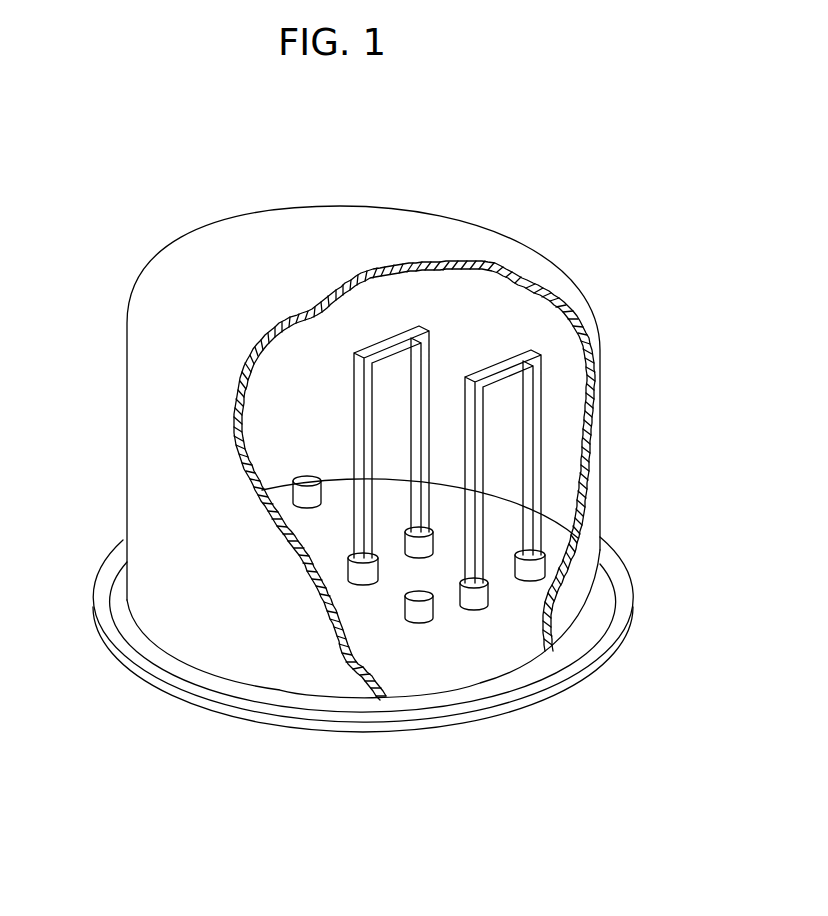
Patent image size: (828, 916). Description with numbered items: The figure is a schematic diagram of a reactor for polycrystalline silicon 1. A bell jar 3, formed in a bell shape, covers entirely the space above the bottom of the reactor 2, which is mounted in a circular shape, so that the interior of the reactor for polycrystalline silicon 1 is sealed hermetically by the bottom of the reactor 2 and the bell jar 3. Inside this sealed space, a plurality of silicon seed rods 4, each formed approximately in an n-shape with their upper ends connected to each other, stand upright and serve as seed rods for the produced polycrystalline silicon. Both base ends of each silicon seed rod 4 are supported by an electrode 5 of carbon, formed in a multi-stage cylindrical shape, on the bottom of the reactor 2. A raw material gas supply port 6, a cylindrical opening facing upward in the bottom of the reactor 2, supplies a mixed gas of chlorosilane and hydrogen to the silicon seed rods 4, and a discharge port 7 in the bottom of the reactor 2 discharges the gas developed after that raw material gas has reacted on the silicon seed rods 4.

The reactor for polycrystalline silicon 1 is at (598, 212).
The bottom of the reactor 2 is at (232, 712).
The bell jar 3 is at (147, 392).
The silicon seed rod 4 is at (427, 320).
The electrode 5 is at (415, 554).
The raw material gas supply port 6 is at (423, 614).
The discharge port 7 is at (313, 500).